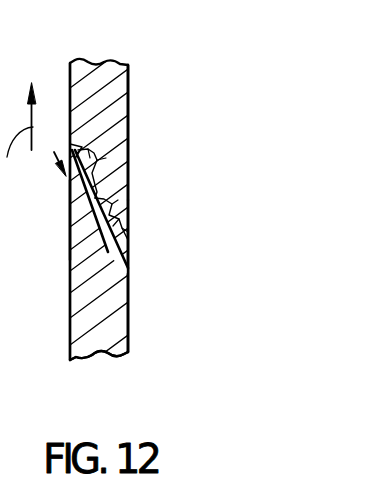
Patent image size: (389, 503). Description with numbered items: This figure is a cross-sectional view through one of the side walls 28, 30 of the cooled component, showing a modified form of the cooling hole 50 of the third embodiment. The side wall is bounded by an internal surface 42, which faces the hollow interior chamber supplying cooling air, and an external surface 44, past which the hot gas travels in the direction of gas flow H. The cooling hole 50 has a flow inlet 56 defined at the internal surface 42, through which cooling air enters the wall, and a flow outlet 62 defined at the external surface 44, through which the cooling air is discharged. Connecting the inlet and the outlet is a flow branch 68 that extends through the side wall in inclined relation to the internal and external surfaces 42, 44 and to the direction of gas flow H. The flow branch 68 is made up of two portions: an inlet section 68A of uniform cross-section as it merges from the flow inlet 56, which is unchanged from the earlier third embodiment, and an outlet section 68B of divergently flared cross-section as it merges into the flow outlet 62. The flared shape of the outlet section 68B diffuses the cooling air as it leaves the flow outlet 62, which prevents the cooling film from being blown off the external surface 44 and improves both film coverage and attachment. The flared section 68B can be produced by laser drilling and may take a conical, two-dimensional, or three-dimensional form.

The side wall 28 is at (97, 63).
The side wall 30 is at (99, 211).
The internal surface 42 is at (162, 132).
The external surface 44 is at (69, 338).
The cooling hole 50 is at (60, 140).
The flow inlet 56 is at (130, 272).
The flow outlet 62 is at (68, 198).
The flow branch 68 is at (68, 282).
The inlet section 68A is at (122, 208).
The outlet section 68B is at (94, 157).
The direction of gas flow H is at (18, 134).